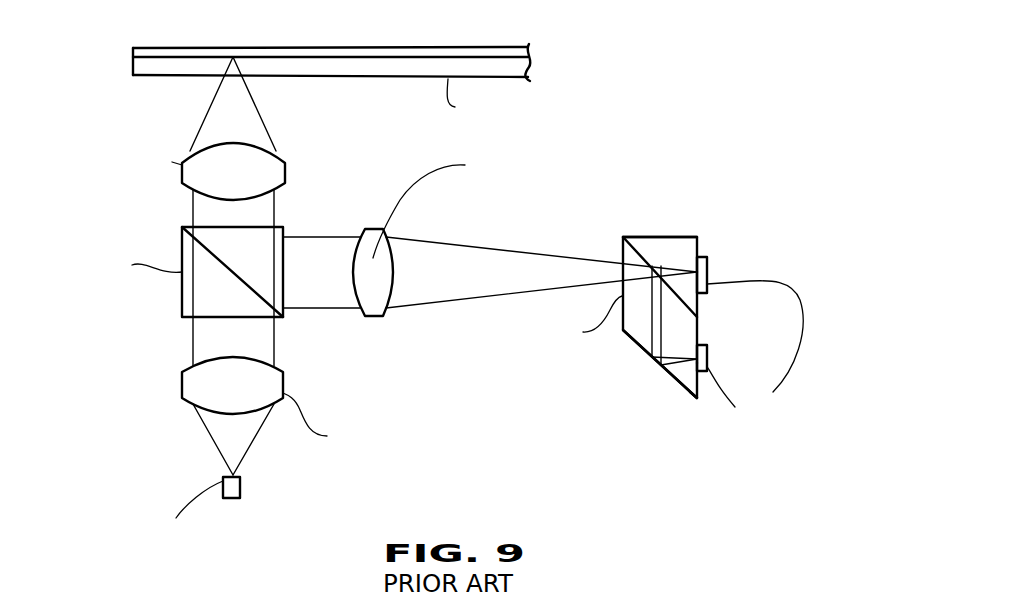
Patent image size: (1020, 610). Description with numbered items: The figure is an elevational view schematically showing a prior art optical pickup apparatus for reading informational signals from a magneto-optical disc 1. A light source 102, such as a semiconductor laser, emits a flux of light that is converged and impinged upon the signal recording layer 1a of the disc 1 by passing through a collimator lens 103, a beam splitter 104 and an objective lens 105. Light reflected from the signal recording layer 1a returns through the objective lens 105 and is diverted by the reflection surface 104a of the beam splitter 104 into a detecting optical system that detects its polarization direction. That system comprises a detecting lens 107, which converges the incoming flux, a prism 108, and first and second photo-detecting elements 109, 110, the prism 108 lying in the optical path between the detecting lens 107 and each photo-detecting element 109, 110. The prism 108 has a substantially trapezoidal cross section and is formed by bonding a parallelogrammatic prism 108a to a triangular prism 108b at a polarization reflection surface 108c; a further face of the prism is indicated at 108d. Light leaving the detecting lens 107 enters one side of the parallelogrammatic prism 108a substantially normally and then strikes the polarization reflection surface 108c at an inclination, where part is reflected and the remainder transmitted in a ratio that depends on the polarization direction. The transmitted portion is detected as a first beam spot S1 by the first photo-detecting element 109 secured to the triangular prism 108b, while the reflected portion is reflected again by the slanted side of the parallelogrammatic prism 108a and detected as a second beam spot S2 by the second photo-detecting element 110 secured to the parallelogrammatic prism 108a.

The magneto-optical disc 1 is at (475, 43).
The signal recording layer 1a is at (421, 57).
The light source 102 is at (241, 487).
The collimator lens 103 is at (276, 383).
The beam splitter 104 is at (283, 228).
The reflection surface 104a is at (274, 303).
The objective lens 105 is at (273, 175).
The detecting lens 107 is at (383, 238).
The prism 108 is at (666, 212).
The parallelogrammatic prism 108a is at (640, 333).
The triangular prism 108b is at (655, 248).
The polarization reflection surface 108c is at (694, 300).
The prism bottom corner face 108d is at (685, 388).
The first photo-detecting element 109 is at (708, 273).
The second photo-detecting element 110 is at (708, 363).
The first beam spot S1 is at (697, 270).
The second beam spot S2 is at (697, 365).